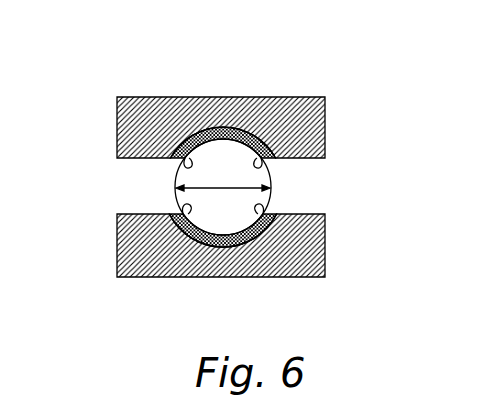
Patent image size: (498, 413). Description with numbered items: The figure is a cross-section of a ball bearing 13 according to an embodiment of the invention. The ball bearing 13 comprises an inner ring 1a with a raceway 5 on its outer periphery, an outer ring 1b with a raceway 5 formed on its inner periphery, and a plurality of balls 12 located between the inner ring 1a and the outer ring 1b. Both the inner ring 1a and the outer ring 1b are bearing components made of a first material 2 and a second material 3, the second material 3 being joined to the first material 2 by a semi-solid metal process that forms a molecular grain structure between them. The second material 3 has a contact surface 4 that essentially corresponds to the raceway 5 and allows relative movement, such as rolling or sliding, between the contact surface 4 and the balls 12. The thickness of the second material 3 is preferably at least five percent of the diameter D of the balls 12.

The inner ring 1a is at (325, 248).
The outer ring 1b is at (117, 125).
The first material 2 is at (295, 112).
The second material 3 is at (220, 129).
The contact surface 4 is at (178, 166).
The raceway 5 is at (270, 172).
The balls 12 is at (176, 194).
The ball bearing 13 is at (200, 177).